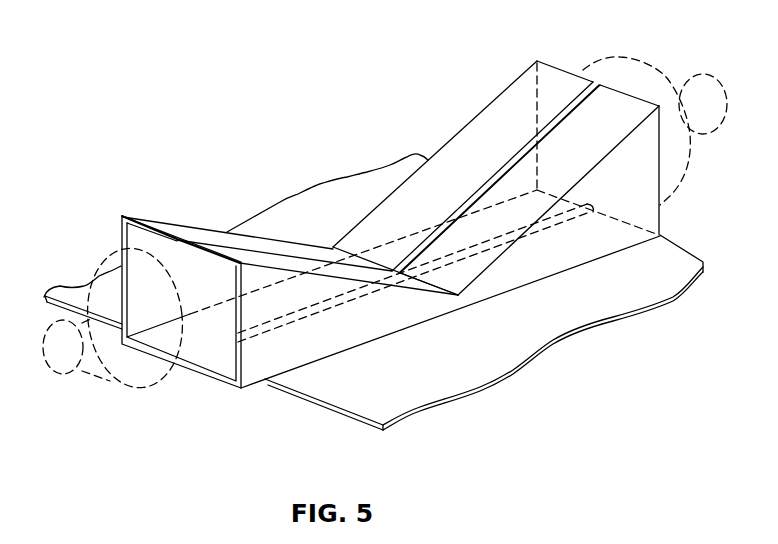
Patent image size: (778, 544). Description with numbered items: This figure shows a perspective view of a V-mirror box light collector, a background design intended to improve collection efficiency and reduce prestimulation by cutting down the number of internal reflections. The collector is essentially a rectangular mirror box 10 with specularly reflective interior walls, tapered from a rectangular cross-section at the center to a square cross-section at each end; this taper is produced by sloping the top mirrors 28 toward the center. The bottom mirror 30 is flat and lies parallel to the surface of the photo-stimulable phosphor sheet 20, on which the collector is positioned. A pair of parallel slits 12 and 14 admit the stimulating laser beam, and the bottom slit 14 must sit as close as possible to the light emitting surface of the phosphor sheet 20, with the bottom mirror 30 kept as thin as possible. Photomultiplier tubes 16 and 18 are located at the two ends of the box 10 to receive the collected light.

The rectangular mirror box 10 is at (592, 230).
The slit 12 is at (432, 249).
The bottom slit 14 is at (178, 365).
The photomultiplier tube 16 is at (622, 70).
The photomultiplier tube 18 is at (121, 383).
The photo-stimulable phosphor sheet 20 is at (668, 293).
The top mirrors 28 is at (312, 247).
The bottom mirror 30 is at (97, 278).